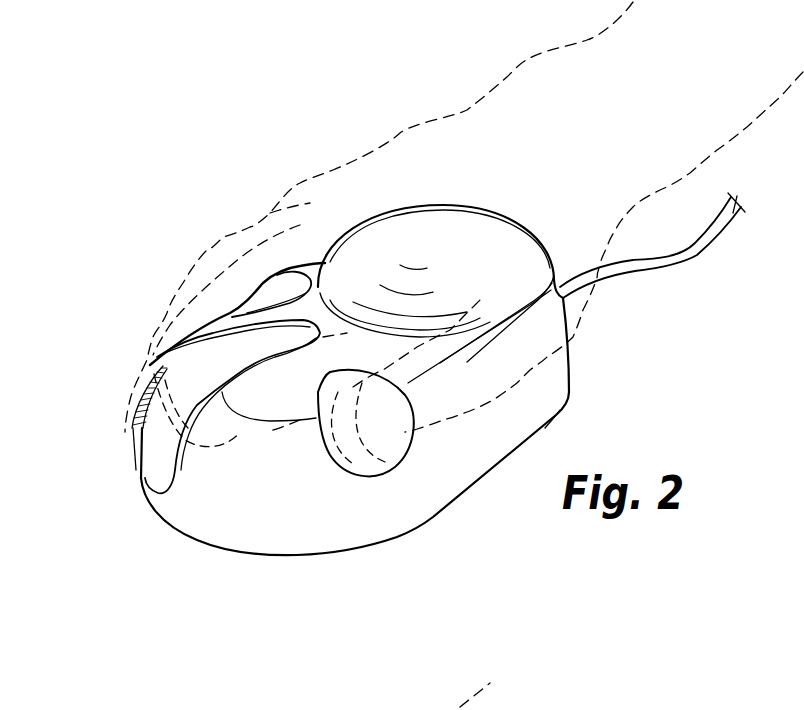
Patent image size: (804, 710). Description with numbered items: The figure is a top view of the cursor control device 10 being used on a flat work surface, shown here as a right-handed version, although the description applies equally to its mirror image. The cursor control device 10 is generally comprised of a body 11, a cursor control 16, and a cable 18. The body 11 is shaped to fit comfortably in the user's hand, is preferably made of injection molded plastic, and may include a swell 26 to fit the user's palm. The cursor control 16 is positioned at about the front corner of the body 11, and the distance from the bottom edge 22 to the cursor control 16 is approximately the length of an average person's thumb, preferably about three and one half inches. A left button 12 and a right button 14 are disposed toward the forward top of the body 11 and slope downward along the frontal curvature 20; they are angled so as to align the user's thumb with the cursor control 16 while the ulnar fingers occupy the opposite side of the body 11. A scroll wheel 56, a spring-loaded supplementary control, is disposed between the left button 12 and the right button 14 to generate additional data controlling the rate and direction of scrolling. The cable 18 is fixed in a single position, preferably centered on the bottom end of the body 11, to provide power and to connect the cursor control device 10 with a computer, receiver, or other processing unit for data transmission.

The cursor control device 10 is at (142, 145).
The body 11 is at (262, 554).
The left button 12 is at (213, 367).
The right button 14 is at (258, 298).
The cursor control 16 is at (340, 433).
The cable 18 is at (687, 260).
The frontal curvature 20 is at (120, 451).
The bottom edge 22 is at (570, 397).
The swell 26 is at (453, 240).
The scroll wheel 56 is at (132, 388).